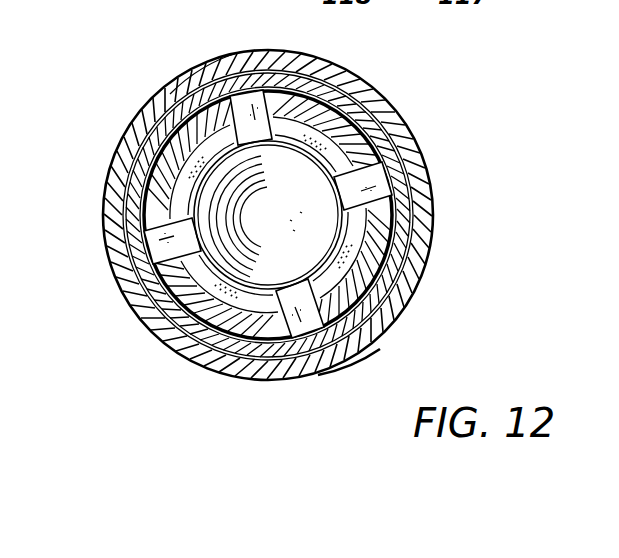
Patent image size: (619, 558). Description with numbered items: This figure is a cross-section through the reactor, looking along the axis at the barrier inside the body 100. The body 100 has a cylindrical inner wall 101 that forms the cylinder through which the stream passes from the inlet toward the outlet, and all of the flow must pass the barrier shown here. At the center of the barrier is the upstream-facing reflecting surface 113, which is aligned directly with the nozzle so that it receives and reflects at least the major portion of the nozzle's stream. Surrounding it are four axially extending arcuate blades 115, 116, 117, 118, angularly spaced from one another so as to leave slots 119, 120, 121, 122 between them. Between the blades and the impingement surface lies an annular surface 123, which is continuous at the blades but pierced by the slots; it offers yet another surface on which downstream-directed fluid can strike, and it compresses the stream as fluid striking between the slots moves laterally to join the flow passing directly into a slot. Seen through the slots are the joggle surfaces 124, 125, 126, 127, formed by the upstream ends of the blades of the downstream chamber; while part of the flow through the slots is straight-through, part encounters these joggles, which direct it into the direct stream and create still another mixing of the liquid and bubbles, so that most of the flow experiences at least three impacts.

The body 100 is at (397, 115).
The cylindrical inner wall 101 is at (430, 205).
The upstream-facing reflecting surface 113 is at (310, 255).
The arcuate blade 115 is at (152, 95).
The arcuate blade 116 is at (393, 230).
The arcuate blade 117 is at (137, 313).
The arcuate blade 118 is at (130, 183).
The slot 119 is at (253, 107).
The slot 120 is at (400, 172).
The slot 121 is at (293, 325).
The slot 122 is at (163, 232).
The annular surface 123 is at (187, 357).
The joggle surface 124 is at (120, 278).
The joggle surface 125 is at (200, 73).
The joggle surface 126 is at (400, 142).
The joggle surface 127 is at (350, 353).